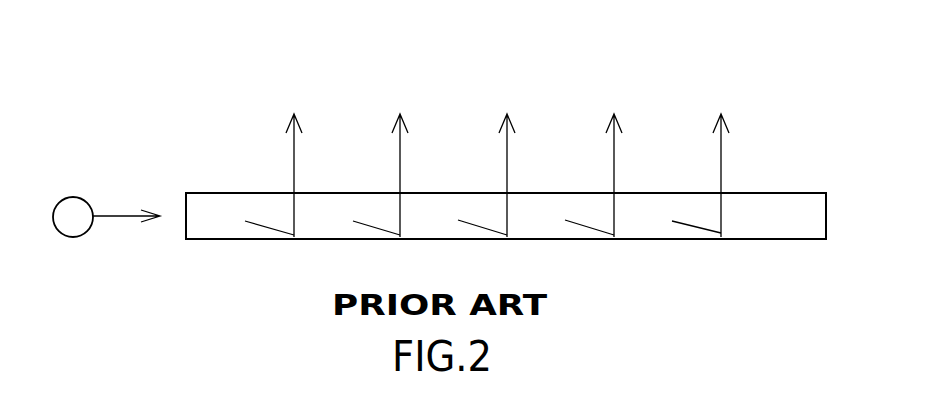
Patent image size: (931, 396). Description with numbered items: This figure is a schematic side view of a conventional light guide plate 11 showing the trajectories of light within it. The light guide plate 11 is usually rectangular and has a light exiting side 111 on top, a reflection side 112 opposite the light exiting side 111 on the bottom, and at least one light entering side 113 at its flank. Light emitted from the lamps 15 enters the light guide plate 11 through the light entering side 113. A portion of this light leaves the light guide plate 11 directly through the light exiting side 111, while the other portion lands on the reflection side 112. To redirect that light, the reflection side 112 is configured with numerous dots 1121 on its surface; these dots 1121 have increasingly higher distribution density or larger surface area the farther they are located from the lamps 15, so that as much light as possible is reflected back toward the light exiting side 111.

The light guide plate 11 is at (343, 101).
The light exiting side 111 is at (648, 193).
The reflection side 112 is at (758, 239).
The dots 1121 is at (658, 239).
The light entering side 113 is at (186, 215).
The lamps 15 is at (73, 237).